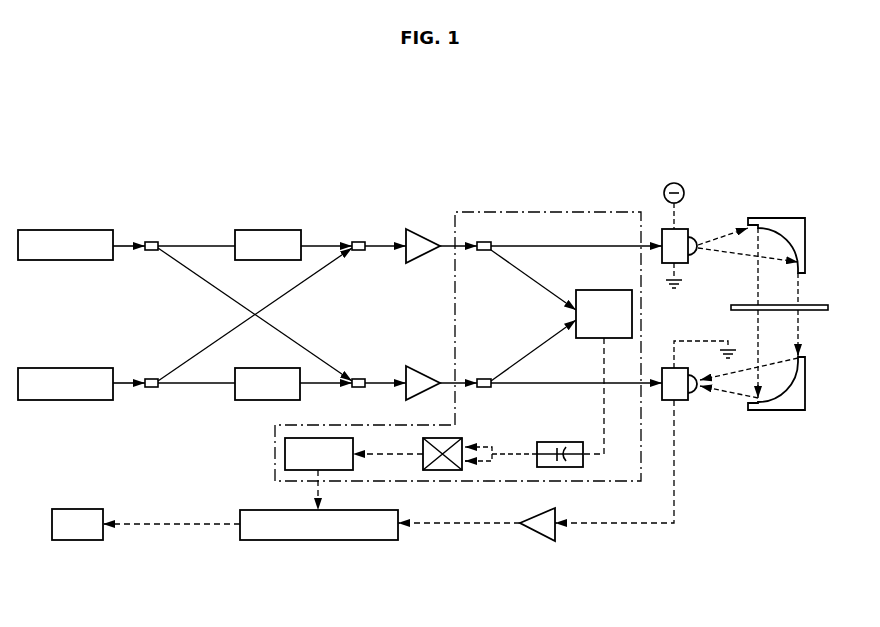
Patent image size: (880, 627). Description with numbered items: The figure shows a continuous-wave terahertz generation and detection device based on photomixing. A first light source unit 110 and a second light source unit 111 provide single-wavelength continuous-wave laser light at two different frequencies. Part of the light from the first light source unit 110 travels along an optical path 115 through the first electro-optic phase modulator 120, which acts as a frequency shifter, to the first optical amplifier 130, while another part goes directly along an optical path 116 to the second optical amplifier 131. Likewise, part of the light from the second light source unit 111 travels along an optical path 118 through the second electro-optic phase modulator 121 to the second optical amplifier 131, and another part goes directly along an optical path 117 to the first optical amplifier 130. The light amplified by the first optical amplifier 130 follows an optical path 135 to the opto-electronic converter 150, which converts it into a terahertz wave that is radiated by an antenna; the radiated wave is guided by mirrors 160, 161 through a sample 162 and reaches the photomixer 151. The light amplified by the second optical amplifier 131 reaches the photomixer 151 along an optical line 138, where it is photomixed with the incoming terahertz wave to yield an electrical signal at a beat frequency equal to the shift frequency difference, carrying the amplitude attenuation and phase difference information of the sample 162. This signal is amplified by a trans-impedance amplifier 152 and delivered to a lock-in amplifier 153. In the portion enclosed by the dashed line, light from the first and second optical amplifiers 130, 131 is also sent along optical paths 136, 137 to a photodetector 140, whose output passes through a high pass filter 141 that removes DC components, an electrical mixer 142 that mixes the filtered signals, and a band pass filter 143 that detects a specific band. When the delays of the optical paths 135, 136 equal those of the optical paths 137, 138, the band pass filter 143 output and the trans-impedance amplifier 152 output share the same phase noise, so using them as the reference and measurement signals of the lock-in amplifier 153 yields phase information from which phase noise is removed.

The first light source unit 110 is at (65, 228).
The second light source unit 111 is at (65, 366).
The optical path 115 is at (170, 243).
The optical path 116 is at (176, 266).
The optical path 117 is at (173, 373).
The optical path 118 is at (176, 389).
The first electro-optic phase modulator 120 is at (295, 226).
The second electro-optic phase modulator 121 is at (258, 366).
The first optical amplifier 130 is at (425, 228).
The second optical amplifier 131 is at (424, 365).
The optical path 135 is at (574, 243).
The optical path 136 is at (546, 292).
The optical path 137 is at (546, 346).
The optical line 138 is at (500, 390).
The photodetector 140 is at (603, 289).
The high pass filter 141 is at (563, 441).
The electrical mixer 142 is at (443, 472).
The band pass filter 143 is at (283, 452).
The opto-electronic converter 150 is at (690, 230).
The photomixer 151 is at (690, 400).
The trans-impedance amplifier 152 is at (540, 538).
The lock-in amplifier 153 is at (304, 542).
The mirror 160 is at (782, 216).
The mirror 161 is at (774, 412).
The sample 162 is at (818, 303).